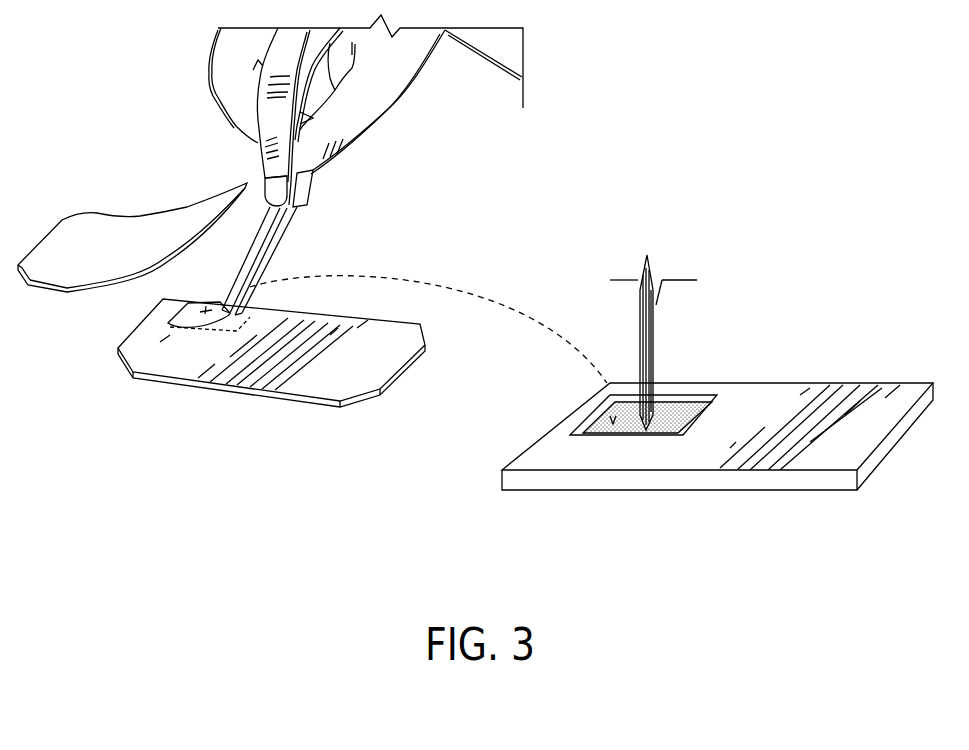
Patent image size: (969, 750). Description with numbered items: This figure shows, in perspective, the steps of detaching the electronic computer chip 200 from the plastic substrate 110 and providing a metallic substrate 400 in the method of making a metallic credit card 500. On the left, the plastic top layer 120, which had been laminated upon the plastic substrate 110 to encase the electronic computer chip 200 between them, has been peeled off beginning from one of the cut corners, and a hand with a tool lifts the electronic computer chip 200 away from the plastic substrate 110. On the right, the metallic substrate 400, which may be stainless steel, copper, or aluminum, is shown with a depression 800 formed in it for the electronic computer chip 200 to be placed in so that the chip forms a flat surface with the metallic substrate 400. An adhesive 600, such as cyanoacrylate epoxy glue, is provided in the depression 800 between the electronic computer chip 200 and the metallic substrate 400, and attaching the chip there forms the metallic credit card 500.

The plastic substrate 110 is at (272, 382).
The plastic top layer 120 is at (95, 233).
The electronic computer chip 200 is at (186, 322).
The metallic substrate 400 is at (613, 458).
The metallic credit card 500 is at (755, 368).
The adhesive 600 is at (673, 420).
The depression 800 is at (640, 325).